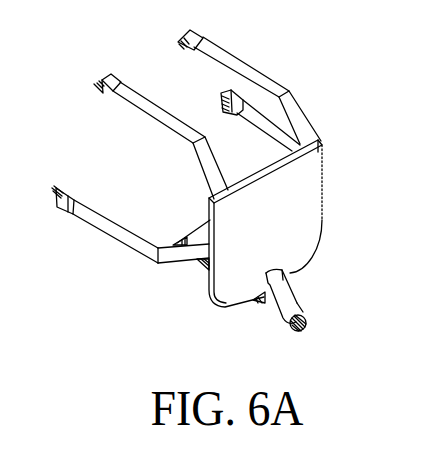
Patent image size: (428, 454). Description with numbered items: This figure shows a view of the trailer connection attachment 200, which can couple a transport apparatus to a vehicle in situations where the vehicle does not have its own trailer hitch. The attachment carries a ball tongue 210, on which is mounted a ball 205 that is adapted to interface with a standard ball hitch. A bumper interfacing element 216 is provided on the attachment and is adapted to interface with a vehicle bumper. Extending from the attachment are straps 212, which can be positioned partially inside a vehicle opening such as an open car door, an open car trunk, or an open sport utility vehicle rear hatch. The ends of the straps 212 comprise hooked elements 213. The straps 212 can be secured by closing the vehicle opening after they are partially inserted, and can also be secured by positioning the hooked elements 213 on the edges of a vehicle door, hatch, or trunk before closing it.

The trailer connection attachment 200 is at (297, 220).
The ball 205 is at (307, 312).
The ball tongue 210 is at (283, 297).
The straps 212 is at (251, 76).
The hooked elements 213 is at (178, 38).
The bumper interfacing element 216 is at (197, 233).